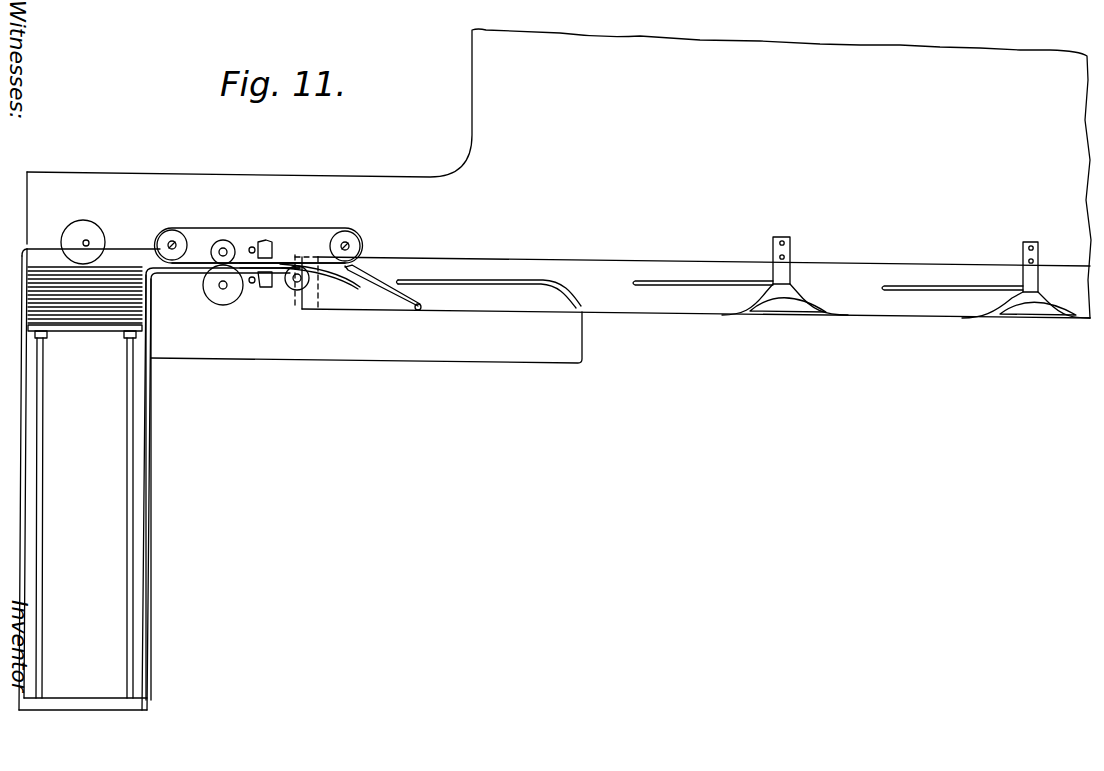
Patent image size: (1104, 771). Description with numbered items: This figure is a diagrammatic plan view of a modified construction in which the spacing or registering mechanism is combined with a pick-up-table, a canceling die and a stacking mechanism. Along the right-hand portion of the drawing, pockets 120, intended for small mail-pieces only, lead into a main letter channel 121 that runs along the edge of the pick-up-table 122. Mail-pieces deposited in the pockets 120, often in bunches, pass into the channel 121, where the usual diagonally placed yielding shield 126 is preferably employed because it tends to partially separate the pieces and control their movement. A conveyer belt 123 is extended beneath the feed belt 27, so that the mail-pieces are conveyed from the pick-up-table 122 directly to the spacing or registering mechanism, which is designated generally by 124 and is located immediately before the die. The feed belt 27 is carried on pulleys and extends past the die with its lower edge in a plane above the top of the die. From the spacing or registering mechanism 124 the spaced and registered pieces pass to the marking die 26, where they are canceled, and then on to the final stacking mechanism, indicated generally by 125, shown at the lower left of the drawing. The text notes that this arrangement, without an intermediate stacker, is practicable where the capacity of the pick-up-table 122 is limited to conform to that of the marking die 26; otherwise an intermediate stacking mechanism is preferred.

The feed belt 27 is at (282, 227).
The marking die 26 is at (212, 300).
The spacing or registering mechanism 124 is at (263, 287).
The diagonally placed yielding shield 126 is at (392, 292).
The final stacking mechanism 125 is at (117, 479).
The conveyer belt 123 is at (580, 280).
The pockets 120 is at (710, 298).
The main letter channel 121 is at (694, 273).
The pick-up-table 122 is at (906, 258).